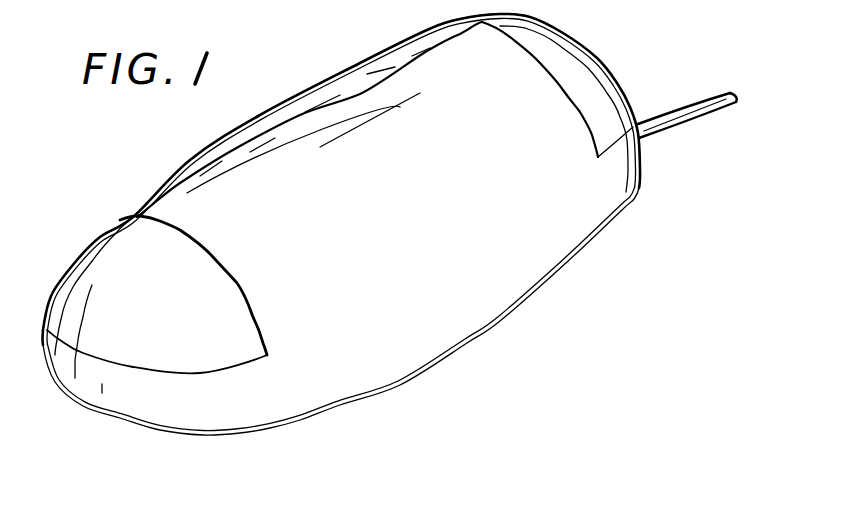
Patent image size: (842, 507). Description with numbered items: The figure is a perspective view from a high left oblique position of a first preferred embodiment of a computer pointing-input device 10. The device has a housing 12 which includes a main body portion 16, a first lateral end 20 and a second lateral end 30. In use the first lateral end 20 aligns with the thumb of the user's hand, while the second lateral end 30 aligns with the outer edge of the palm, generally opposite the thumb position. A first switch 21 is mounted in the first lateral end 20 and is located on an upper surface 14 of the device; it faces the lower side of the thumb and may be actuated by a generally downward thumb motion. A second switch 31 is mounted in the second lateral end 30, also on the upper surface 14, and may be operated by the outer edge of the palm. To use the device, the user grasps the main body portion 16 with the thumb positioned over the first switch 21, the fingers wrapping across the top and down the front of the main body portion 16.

The computer pointing-input device 10 is at (351, 35).
The housing 12 is at (226, 145).
The upper surface 14 is at (307, 115).
The main body portion 16 is at (392, 227).
The first lateral end 20 is at (110, 429).
The first switch 21 is at (98, 253).
The second lateral end 30 is at (653, 167).
The second switch 31 is at (610, 100).